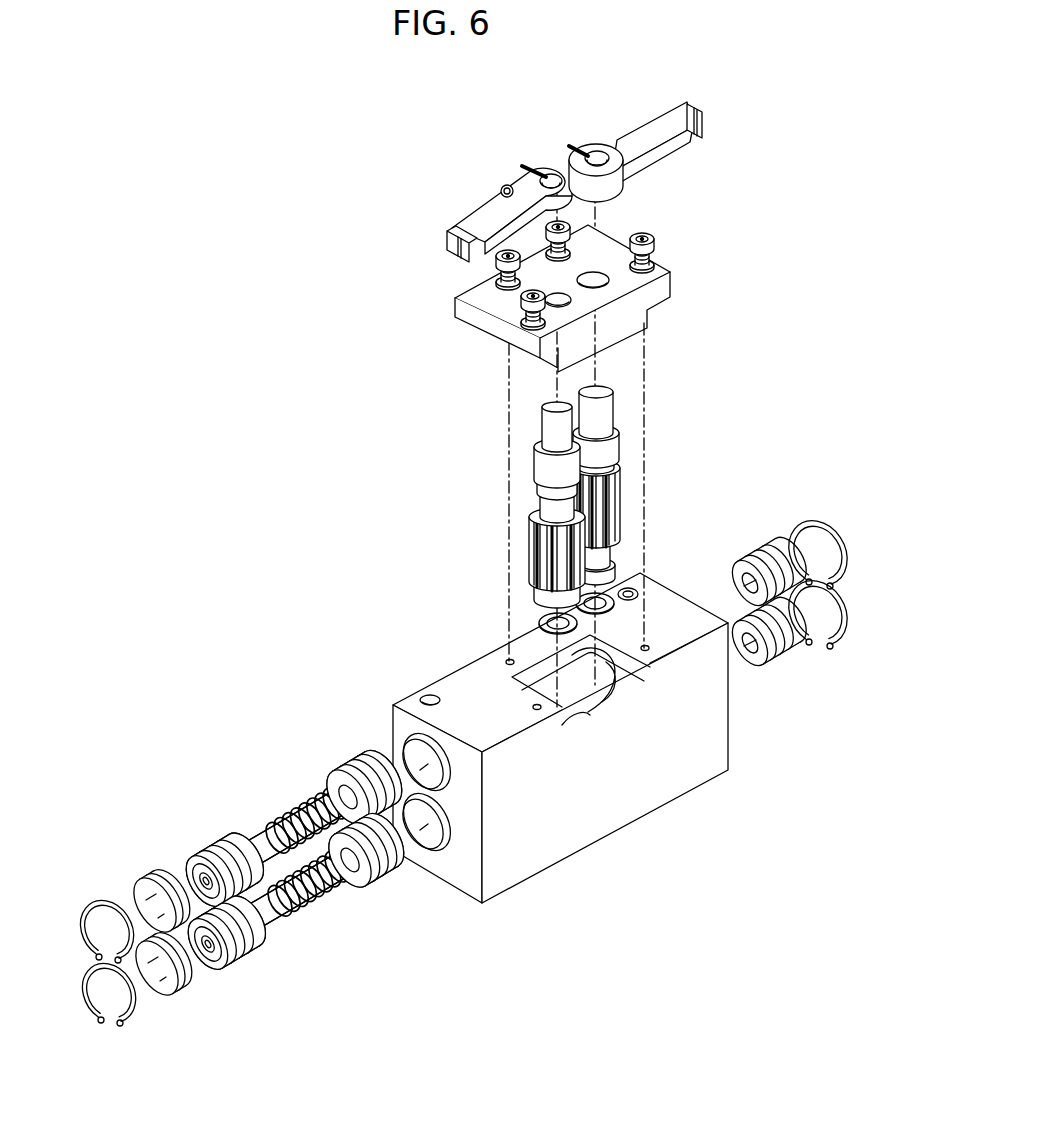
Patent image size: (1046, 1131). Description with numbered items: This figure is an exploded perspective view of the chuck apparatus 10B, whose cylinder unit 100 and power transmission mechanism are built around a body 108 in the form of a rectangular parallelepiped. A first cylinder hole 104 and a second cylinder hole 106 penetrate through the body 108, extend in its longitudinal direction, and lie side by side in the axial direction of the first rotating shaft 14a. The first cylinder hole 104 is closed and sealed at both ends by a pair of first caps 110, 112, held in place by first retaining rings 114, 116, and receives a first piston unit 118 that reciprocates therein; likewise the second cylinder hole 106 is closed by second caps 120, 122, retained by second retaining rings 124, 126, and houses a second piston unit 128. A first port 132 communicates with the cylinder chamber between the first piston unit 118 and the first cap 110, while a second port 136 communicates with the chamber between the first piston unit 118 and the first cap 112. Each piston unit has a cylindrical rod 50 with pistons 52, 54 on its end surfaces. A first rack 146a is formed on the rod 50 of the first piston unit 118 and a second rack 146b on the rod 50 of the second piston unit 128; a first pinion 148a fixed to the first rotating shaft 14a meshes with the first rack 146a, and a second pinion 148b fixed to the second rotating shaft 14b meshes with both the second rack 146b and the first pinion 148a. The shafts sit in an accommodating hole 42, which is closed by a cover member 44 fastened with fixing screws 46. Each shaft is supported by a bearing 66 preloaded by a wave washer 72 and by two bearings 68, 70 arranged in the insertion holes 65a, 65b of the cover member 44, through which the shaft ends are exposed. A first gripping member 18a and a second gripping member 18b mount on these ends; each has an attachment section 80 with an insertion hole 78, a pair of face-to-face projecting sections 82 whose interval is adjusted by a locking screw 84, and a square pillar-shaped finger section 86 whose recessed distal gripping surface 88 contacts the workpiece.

The chuck apparatus 10B is at (245, 150).
The first rotating shaft 14a is at (651, 482).
The second rotating shaft 14b is at (512, 505).
The first gripping member 18a is at (671, 100).
The second gripping member 18b is at (461, 211).
The accommodating hole 42 is at (578, 698).
The cover member 44 is at (579, 300).
The fixing screws 46 is at (654, 243).
The rod 50 is at (252, 843).
The piston 52 is at (198, 862).
The piston 54 is at (353, 768).
The insertion hole 65a is at (603, 283).
The insertion hole 65b is at (548, 300).
The bearing 66 is at (607, 592).
The bearing 68 is at (538, 485).
The bearing 70 is at (540, 465).
The wave washer 72 is at (543, 623).
The insertion hole 78 is at (609, 158).
The attachment section 80 is at (630, 186).
The projecting sections 82 is at (532, 170).
The locking screw 84 is at (501, 191).
The finger section 86 is at (446, 252).
The gripping surface 88 is at (457, 232).
The cylinder unit 100 is at (548, 738).
The first cylinder hole 104 is at (448, 773).
The second cylinder hole 106 is at (448, 833).
The body 108 is at (670, 780).
The first cap 110 is at (747, 556).
The first cap 112 is at (141, 880).
The first retaining ring 114 is at (807, 521).
The first retaining ring 116 is at (90, 903).
The first piston unit 118 is at (237, 834).
The second cap 120 is at (775, 667).
The second cap 122 is at (171, 992).
The second retaining ring 124 is at (842, 643).
The second retaining ring 126 is at (111, 1020).
The second piston unit 128 is at (247, 948).
The first port 132 is at (638, 591).
The second port 136 is at (441, 704).
The first rack 146a is at (303, 822).
The second rack 146b is at (292, 928).
The first pinion 148a is at (620, 482).
The second pinion 148b is at (530, 534).